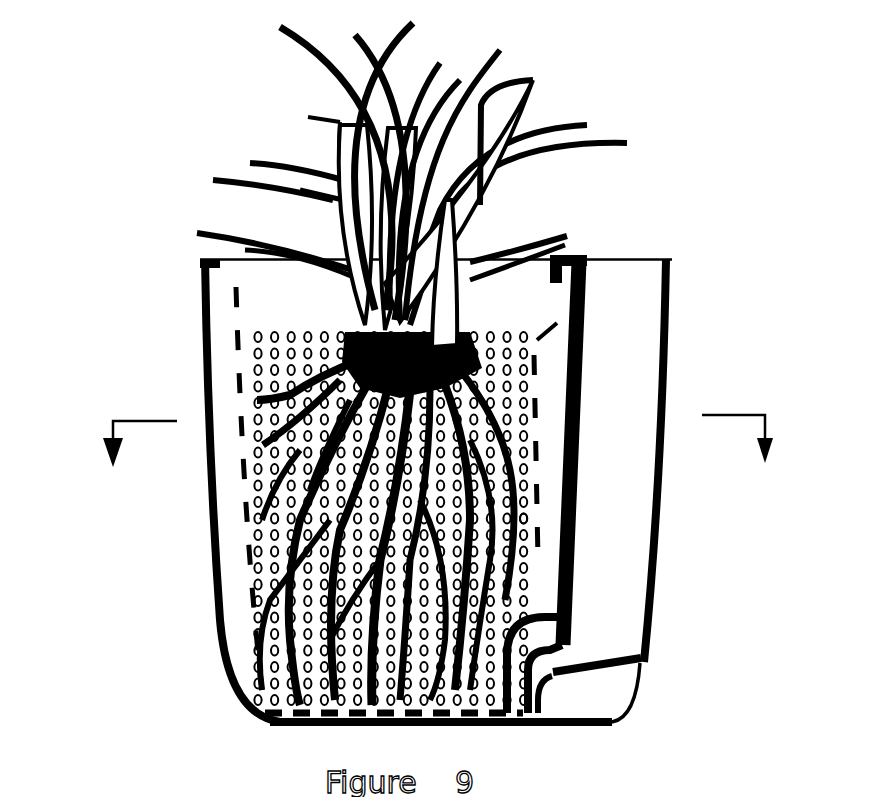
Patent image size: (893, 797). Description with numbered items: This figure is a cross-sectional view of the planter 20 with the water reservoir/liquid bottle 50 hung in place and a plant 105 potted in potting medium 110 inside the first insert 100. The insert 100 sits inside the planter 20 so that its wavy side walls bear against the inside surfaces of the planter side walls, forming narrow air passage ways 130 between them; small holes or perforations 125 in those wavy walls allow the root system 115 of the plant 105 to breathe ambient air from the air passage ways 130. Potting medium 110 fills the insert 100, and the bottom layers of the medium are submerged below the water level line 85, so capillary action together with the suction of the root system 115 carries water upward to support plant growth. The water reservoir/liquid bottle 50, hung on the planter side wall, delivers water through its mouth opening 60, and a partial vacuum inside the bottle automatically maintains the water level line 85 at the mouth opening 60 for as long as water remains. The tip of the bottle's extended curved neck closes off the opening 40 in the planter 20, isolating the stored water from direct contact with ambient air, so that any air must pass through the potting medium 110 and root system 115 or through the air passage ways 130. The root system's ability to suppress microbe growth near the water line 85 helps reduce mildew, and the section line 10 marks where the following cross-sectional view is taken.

The section line 10— 10 is at (448, 463).
The planter 20 is at (143, 270).
The opening 40 is at (523, 713).
The water reservoir/liquid bottle 50 is at (672, 288).
The mouth opening 60 is at (538, 714).
The water level line 85 is at (264, 727).
The first insert 100 is at (248, 510).
The plant 105 is at (480, 222).
The potting medium 110 is at (243, 384).
The root system 115 is at (290, 620).
The holes or perforations 125 is at (528, 515).
The air passage ways 130 is at (237, 577).